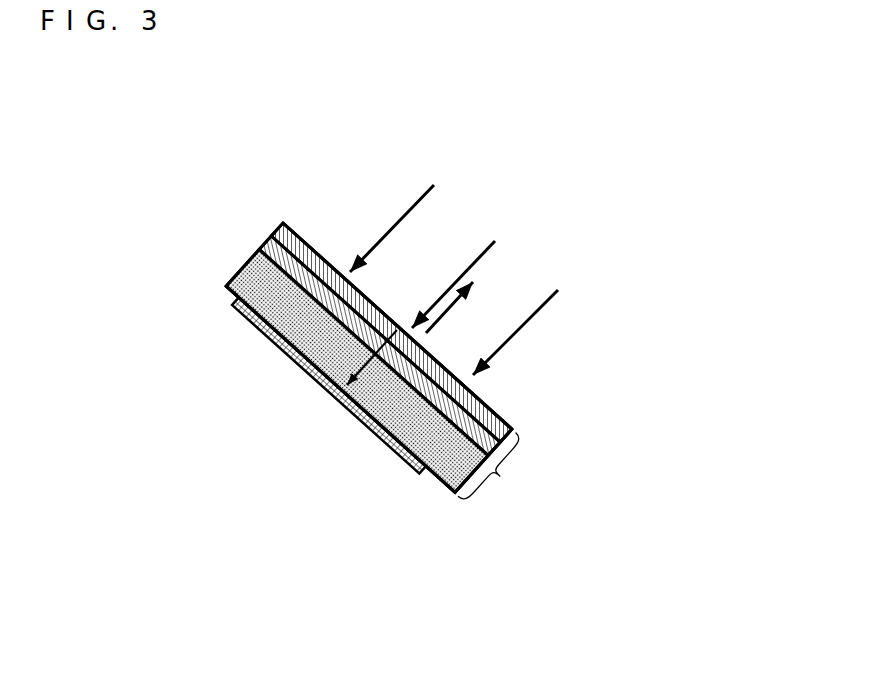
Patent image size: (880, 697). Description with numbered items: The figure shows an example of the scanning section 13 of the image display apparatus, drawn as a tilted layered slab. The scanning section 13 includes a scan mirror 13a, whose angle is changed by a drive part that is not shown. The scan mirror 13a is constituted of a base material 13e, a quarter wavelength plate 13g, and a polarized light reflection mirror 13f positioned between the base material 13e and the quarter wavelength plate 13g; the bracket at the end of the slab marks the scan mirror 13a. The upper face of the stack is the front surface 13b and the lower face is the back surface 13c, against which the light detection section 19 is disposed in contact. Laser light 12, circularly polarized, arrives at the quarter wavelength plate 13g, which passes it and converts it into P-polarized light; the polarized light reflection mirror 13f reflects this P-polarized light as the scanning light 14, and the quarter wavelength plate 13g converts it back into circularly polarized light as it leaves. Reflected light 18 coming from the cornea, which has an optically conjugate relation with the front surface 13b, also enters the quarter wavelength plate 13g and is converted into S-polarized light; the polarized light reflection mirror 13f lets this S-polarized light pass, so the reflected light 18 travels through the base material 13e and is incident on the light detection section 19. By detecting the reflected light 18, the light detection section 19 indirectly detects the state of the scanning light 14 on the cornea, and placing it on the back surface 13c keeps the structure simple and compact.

The scanning section 13 is at (146, 119).
The laser light 12 is at (394, 222).
The reflected light 18 is at (471, 262).
The scanning light 14 is at (462, 298).
The base material 13e is at (255, 273).
The polarized light reflection mirror 13f is at (272, 240).
The quarter wavelength plate 13g is at (287, 225).
The front surface 13b is at (490, 411).
The back surface 13c is at (432, 477).
The scan mirror 13a is at (501, 468).
The light detection section 19 is at (387, 453).